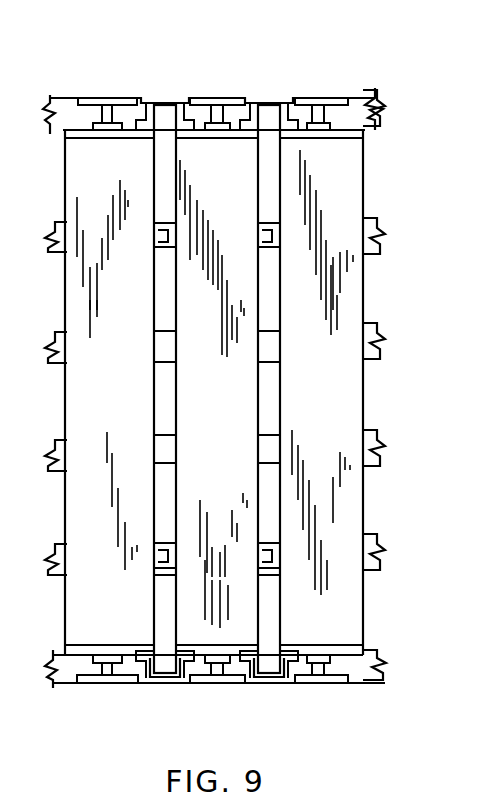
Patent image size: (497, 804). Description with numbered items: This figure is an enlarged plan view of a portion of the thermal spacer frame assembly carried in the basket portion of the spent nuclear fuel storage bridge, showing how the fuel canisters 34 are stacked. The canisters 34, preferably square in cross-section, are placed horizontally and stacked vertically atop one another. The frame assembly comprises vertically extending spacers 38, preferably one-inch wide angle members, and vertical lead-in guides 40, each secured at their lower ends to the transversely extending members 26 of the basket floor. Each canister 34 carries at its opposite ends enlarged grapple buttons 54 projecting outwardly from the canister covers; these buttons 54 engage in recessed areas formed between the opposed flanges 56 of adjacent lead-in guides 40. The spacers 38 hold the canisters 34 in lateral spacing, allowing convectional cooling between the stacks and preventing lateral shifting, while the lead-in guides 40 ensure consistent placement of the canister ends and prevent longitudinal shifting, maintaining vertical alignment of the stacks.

The transversely extending members 26 is at (385, 675).
The fuel canister 34 is at (332, 395).
The spacer 38 is at (258, 553).
The lead-in guide 40 is at (268, 677).
The grapple button 54 is at (225, 683).
The flange 56 is at (335, 683).